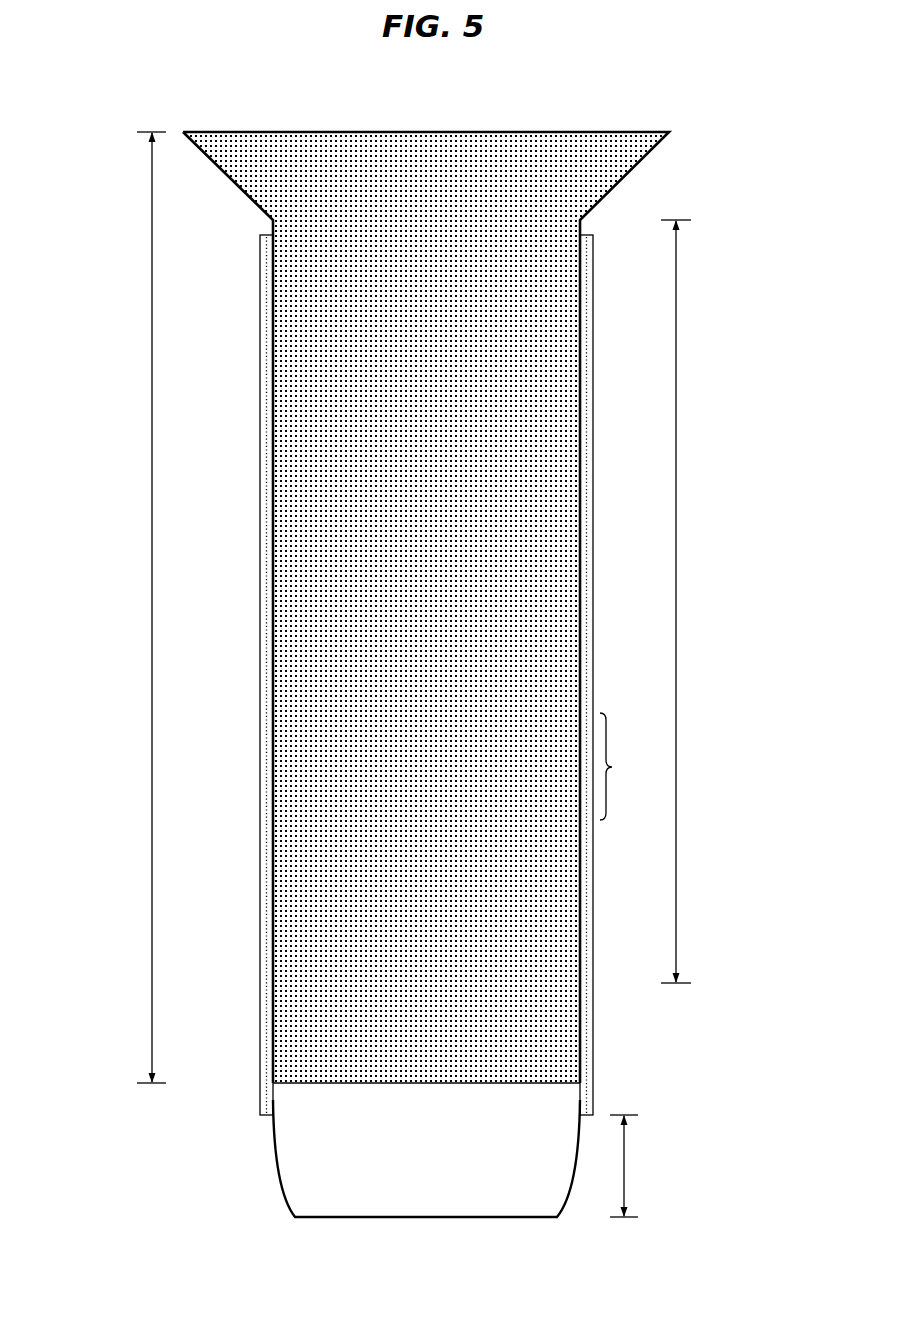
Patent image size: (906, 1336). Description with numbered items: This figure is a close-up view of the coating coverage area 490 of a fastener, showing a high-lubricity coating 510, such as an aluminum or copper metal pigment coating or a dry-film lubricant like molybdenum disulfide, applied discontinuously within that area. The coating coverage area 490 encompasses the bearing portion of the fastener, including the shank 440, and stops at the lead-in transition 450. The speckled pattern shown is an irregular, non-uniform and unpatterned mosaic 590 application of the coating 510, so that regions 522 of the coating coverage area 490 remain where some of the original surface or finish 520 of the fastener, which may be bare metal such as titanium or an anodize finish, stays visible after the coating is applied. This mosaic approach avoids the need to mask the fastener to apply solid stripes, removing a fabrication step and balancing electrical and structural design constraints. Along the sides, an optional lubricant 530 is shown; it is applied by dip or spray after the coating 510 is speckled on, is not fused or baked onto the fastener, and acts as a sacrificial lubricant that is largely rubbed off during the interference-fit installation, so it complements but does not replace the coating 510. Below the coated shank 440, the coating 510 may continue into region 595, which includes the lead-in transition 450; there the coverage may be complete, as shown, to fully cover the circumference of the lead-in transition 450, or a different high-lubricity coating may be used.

The coating 510 is at (289, 740).
The original surface/finish 520 is at (286, 707).
The regions 522 is at (314, 650).
The lubricant 530 is at (260, 262).
The region 595 is at (410, 1190).
The coating coverage area 490 is at (152, 590).
The shank 440 is at (676, 548).
The lead-in transition 450 is at (624, 1157).
The mosaic 590 is at (630, 766).